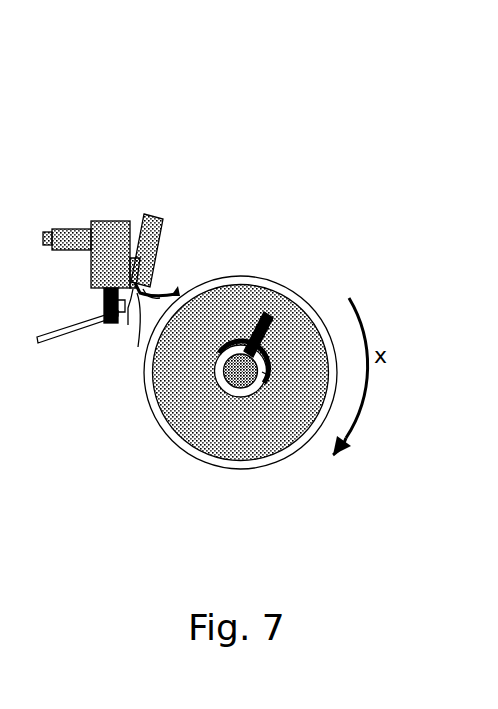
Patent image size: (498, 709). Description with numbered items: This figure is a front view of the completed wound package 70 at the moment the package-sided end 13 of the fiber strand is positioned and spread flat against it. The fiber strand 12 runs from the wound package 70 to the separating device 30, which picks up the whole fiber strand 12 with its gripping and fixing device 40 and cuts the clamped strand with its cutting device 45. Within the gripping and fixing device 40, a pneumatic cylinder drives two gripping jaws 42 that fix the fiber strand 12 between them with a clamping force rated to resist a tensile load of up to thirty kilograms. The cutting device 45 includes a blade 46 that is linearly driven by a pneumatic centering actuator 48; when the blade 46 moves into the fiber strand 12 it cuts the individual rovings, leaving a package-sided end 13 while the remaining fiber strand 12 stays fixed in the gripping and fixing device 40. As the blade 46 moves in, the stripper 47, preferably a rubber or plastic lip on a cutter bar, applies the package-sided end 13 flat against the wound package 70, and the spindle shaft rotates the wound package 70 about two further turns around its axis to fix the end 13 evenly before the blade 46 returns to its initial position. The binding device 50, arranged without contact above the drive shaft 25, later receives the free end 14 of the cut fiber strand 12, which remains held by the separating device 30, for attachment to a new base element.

The fiber strand 12 is at (56, 335).
The package-sided end 13 is at (232, 287).
The free end 14 is at (138, 347).
The drive shaft 25 is at (246, 373).
The separating device 30 is at (70, 195).
The gripping and fixing device 40 is at (112, 209).
The gripping jaws 42 is at (112, 327).
The cutting device 45 is at (142, 204).
The blade 46 is at (128, 325).
The stripper 47 is at (178, 290).
The pneumatic centering actuator 48 is at (167, 288).
The binding device 50 is at (278, 341).
The wound package 70 is at (300, 395).